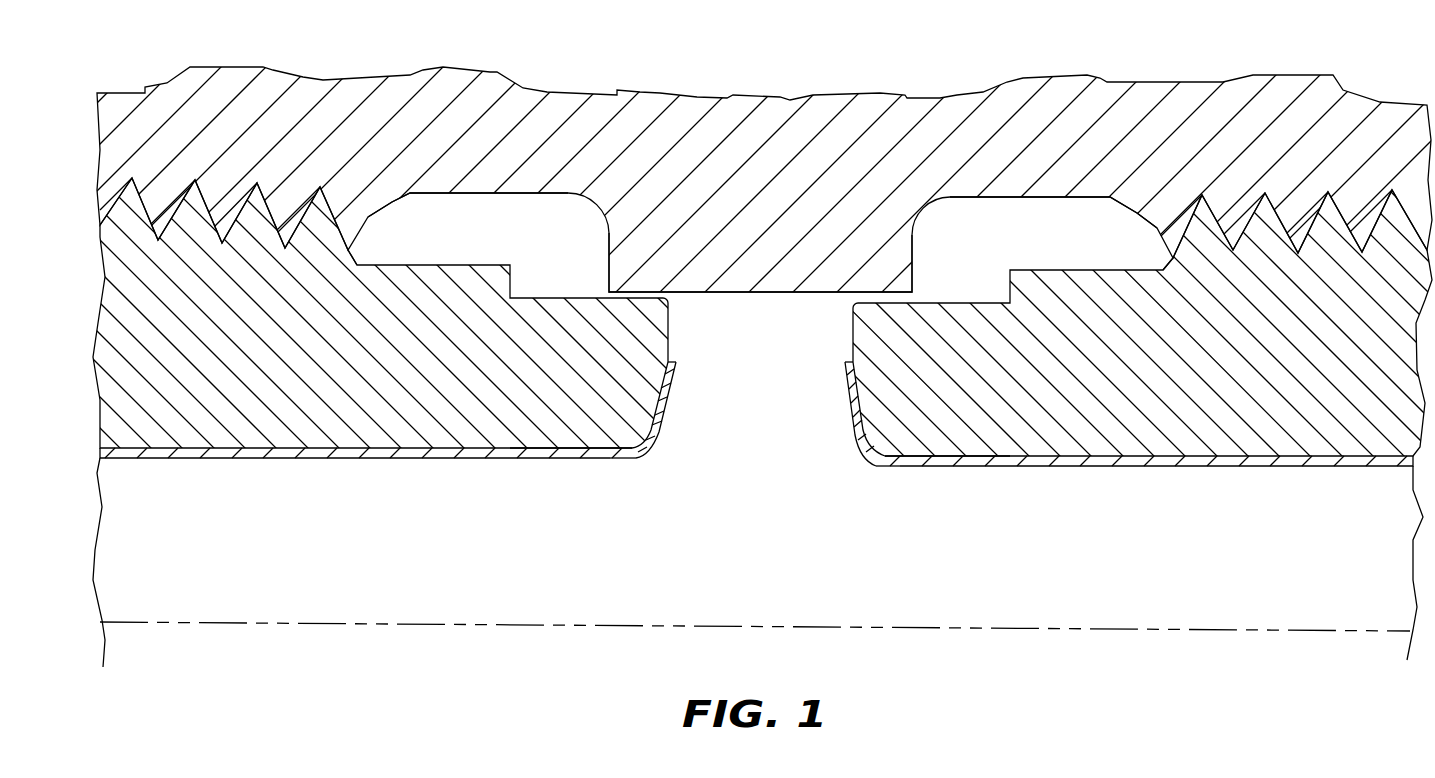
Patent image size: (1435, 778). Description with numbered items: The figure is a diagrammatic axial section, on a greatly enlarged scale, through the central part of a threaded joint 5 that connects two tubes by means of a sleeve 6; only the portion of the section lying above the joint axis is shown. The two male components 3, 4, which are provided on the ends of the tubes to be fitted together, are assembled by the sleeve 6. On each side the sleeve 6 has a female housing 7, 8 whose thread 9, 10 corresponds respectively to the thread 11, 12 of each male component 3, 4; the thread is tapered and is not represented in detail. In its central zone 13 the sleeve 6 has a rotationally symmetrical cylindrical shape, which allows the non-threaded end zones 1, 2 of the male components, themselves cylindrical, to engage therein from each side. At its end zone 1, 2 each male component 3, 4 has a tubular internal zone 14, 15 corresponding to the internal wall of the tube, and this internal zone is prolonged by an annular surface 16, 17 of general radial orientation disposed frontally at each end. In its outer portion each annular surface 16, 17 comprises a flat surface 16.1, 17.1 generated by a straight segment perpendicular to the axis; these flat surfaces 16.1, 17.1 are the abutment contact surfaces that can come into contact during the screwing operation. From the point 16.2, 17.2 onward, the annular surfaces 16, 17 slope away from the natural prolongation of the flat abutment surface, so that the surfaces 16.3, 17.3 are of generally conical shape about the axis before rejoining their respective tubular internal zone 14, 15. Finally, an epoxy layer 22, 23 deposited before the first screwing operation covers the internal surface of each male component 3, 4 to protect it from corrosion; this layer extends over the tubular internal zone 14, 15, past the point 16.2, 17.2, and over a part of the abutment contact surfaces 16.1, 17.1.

The non-threaded end zone 1 is at (583, 430).
The non-threaded end zone 2 is at (933, 432).
The male component 3 is at (149, 391).
The male component 4 is at (1354, 402).
The joint 5 is at (960, 82).
The sleeve 6 is at (633, 107).
The female housing 7 is at (522, 223).
The female housing 8 is at (998, 227).
The thread 9 is at (230, 224).
The thread 10 is at (1275, 212).
The thread 11 is at (238, 230).
The thread 12 is at (1286, 238).
The central zone 13 is at (785, 223).
The tubular internal zone 14 is at (503, 459).
The tubular internal zone 15 is at (1017, 467).
The annular surface 16 is at (666, 414).
The flat surface 16.1 is at (668, 330).
The point 16.2 is at (667, 369).
The conical surface 16.3 is at (642, 459).
The annular surface 17 is at (856, 413).
The flat surface 17.1 is at (852, 335).
The point 17.2 is at (862, 370).
The conical surface 17.3 is at (878, 460).
The epoxy layer 22 is at (400, 460).
The epoxy layer 23 is at (1120, 467).